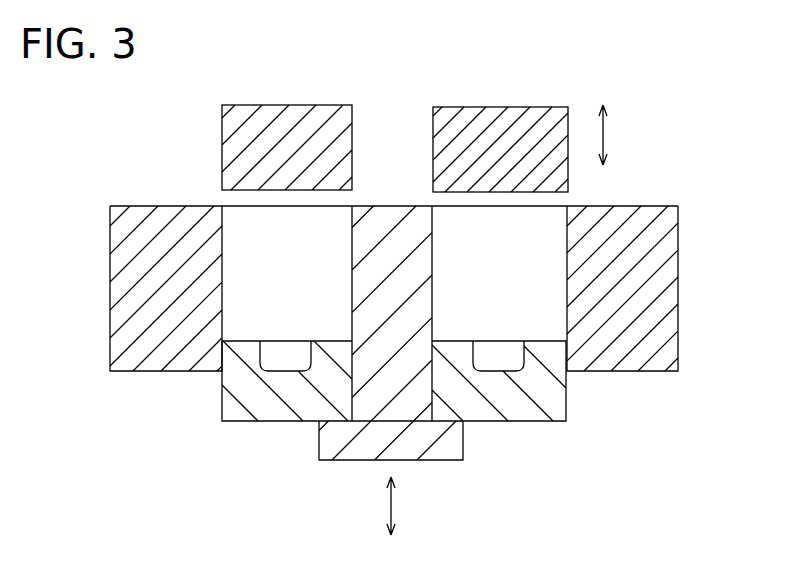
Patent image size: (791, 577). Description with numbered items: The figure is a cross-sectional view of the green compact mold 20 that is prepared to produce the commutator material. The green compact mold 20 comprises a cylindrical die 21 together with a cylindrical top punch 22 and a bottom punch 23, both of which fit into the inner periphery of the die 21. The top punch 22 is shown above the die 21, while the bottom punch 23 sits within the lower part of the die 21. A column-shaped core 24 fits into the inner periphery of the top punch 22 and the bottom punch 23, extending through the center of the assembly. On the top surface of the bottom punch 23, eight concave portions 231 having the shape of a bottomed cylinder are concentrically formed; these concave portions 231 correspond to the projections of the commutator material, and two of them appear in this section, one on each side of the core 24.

The green compact mold 20 is at (668, 546).
The cylindrical die 21 is at (665, 243).
The cylindrical top punch 22 is at (553, 112).
The bottom punch 23 is at (558, 413).
The concave portion 231 is at (505, 363).
The column-shaped core 24 is at (463, 460).